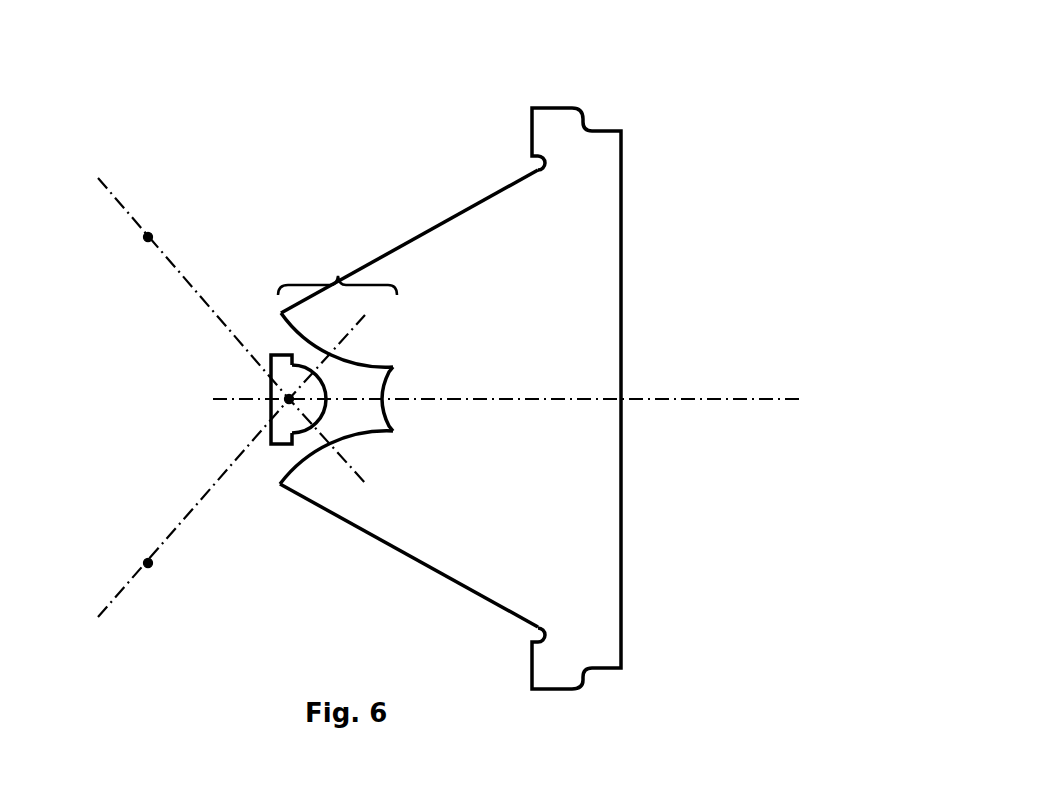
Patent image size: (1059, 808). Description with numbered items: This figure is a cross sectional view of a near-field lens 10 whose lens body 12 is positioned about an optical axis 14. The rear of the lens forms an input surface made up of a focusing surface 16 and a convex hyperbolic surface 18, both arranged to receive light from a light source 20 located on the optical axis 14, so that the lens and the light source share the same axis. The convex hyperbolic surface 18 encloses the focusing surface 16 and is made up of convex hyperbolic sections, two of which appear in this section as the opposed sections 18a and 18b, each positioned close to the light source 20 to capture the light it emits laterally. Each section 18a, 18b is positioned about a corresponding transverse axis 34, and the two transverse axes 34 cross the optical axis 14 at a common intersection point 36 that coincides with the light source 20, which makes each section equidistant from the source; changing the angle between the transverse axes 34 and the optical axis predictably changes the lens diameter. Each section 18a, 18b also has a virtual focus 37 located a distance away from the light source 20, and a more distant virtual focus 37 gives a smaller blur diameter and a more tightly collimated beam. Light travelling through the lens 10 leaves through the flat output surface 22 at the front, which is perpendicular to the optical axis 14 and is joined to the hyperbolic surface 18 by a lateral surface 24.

The near-field lens 10 is at (790, 131).
The lens body 12 is at (455, 530).
The optical axis 14 is at (702, 399).
The focusing surface 16 is at (395, 382).
The convex hyperbolic surface 18 is at (338, 275).
The convex hyperbolic section 18a is at (284, 328).
The convex hyperbolic section 18b is at (287, 456).
The light source 20 is at (270, 390).
The output surface 22 is at (621, 173).
The lateral surface 24 is at (475, 206).
The transverse axis 34 is at (128, 210).
The common intersection point 36 is at (288, 400).
The virtual focus 37 is at (149, 236).